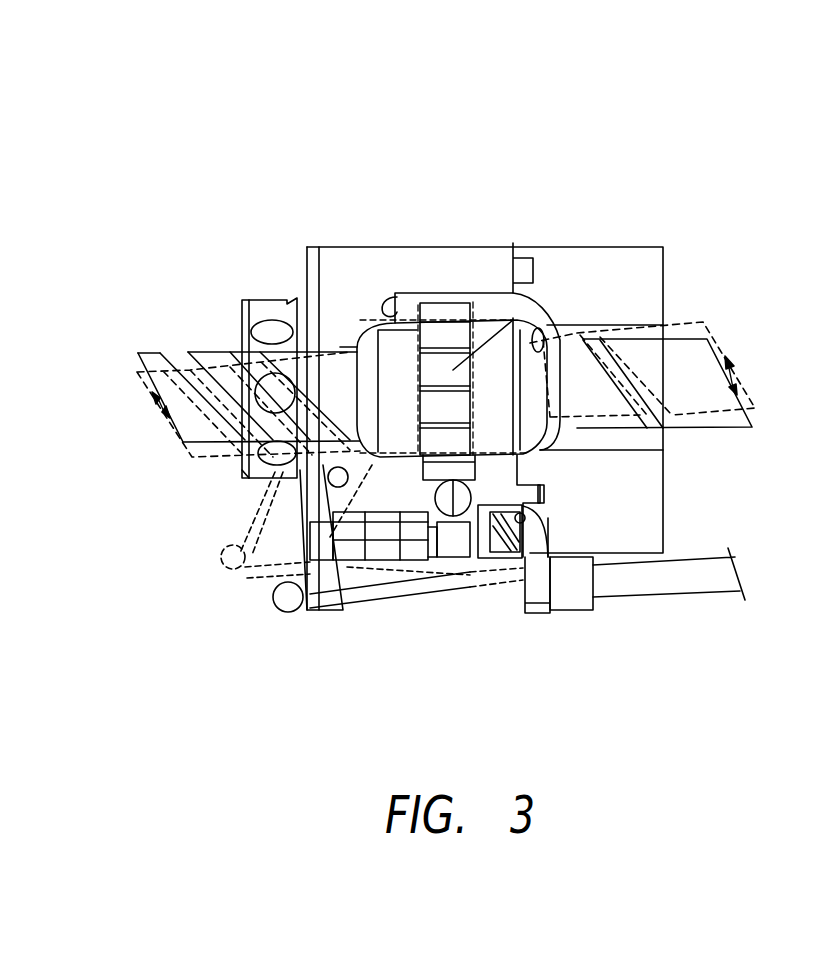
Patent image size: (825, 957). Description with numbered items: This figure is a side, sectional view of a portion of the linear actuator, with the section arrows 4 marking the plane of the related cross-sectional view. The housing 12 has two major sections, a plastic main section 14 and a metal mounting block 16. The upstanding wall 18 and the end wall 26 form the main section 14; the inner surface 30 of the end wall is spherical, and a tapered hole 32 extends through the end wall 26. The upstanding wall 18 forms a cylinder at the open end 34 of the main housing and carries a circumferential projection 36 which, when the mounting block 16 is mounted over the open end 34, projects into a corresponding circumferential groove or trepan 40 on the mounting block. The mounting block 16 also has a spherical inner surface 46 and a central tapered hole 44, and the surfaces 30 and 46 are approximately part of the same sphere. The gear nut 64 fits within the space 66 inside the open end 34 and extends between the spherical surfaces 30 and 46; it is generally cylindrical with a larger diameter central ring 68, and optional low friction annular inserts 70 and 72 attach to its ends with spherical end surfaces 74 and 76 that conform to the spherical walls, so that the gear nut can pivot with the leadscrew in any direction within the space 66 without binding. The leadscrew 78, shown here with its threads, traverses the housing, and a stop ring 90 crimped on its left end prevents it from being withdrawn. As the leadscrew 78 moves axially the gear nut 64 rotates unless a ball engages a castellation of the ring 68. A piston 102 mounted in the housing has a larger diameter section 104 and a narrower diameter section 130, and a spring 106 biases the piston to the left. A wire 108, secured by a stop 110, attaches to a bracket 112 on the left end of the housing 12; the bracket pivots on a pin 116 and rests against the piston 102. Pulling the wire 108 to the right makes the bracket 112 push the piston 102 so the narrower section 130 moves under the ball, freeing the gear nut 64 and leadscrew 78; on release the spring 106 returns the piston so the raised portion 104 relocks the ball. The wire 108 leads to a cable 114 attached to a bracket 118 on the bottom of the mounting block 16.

The section line 4- 4 is at (443, 140).
The housing 12 is at (250, 185).
The main section 14 is at (330, 246).
The mounting block 16 is at (655, 478).
The upstanding wall 18 is at (474, 262).
The end wall 26 is at (368, 473).
The inner surface 30 is at (392, 294).
The tapered hole 32 is at (300, 352).
The open end 34 is at (491, 313).
The circumferential projection 36 is at (546, 493).
The groove 40 is at (531, 512).
The central tapered hole 44 is at (604, 320).
The spherical inner surface 46 is at (548, 342).
The gear nut 64 is at (473, 303).
The space 66 is at (406, 307).
The central ring 68 is at (541, 328).
The insert 70 is at (280, 304).
The insert 72 is at (532, 377).
The spherical end surface 74 is at (357, 345).
The spherical end surface 76 is at (531, 452).
The leadscrew 78 is at (160, 408).
The stop ring 90 is at (244, 470).
The piston 102 is at (360, 593).
The larger diameter section 104 is at (453, 498).
The spring 106 is at (550, 557).
The wire 108 is at (378, 593).
The stop 110 is at (290, 613).
The bracket 112 is at (277, 600).
The cable 114 is at (665, 585).
The pin 116 is at (333, 480).
The bracket 118 is at (540, 608).
The narrower diameter section 130 is at (412, 550).